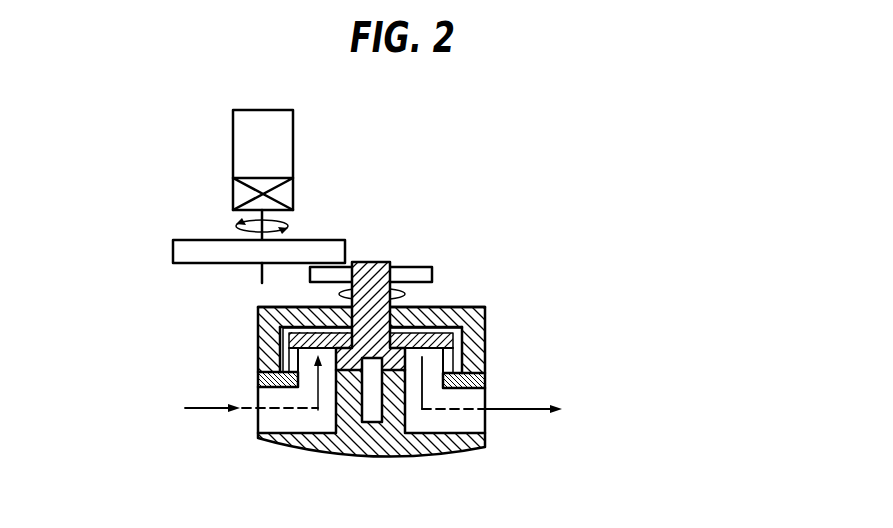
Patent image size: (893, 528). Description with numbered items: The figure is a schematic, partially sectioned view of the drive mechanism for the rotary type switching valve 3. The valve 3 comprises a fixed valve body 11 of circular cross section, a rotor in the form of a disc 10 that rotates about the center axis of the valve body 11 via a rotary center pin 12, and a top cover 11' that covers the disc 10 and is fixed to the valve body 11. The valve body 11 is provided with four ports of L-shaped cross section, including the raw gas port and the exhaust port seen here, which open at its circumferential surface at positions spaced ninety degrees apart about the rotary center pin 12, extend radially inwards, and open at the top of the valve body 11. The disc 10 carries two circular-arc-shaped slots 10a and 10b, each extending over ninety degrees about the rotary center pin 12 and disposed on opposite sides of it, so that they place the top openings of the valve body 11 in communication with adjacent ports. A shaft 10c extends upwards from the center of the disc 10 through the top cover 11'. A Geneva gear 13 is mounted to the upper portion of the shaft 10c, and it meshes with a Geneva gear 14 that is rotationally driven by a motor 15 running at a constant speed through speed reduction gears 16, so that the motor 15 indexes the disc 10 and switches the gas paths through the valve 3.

The rotary type switching valve 3 is at (400, 371).
The disc 10 is at (290, 338).
The circular-arc-shaped slot 10a is at (312, 356).
The circular-arc-shaped slot 10b is at (435, 357).
The shaft 10c is at (340, 295).
The valve body 11 is at (371, 401).
The top cover 11' is at (389, 287).
The rotary center pin 12 is at (372, 405).
The Geneva gear 13 is at (418, 267).
The Geneva gear 14 is at (307, 240).
The motor 15 is at (233, 140).
The speed reduction gears 16 is at (293, 192).